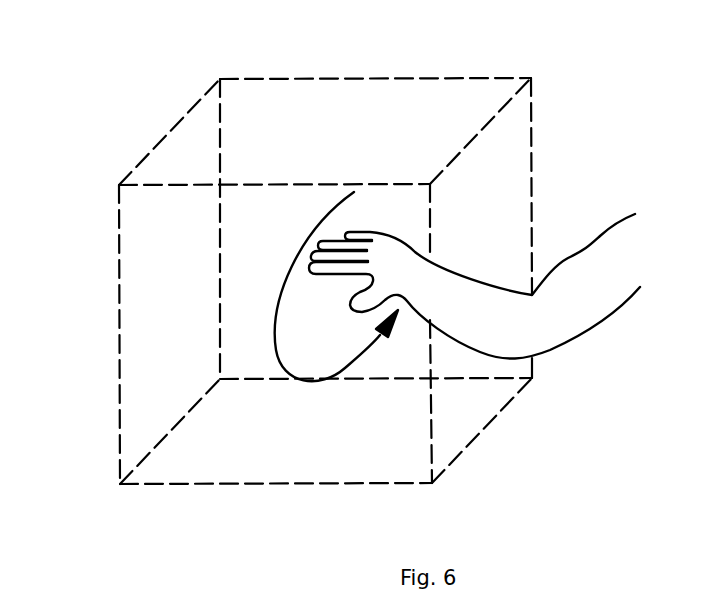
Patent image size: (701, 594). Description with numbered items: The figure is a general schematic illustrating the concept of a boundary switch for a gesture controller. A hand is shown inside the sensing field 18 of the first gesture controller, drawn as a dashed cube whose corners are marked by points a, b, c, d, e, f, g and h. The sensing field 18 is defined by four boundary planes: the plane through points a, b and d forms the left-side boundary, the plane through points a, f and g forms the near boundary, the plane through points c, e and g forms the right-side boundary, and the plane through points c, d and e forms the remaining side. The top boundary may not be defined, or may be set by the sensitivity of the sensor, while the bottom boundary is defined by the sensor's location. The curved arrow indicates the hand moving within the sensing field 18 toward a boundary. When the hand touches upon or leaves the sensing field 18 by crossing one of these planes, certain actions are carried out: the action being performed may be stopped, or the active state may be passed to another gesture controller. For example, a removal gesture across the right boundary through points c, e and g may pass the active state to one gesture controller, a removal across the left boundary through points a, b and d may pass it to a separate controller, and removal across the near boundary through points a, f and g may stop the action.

The sensing field 18 is at (368, 78).
The point a is at (432, 483).
The point b is at (120, 484).
The point c is at (220, 379).
The point d is at (119, 185).
The point e is at (220, 79).
The point f is at (430, 184).
The point g is at (531, 78).
The cube corner h is at (532, 378).